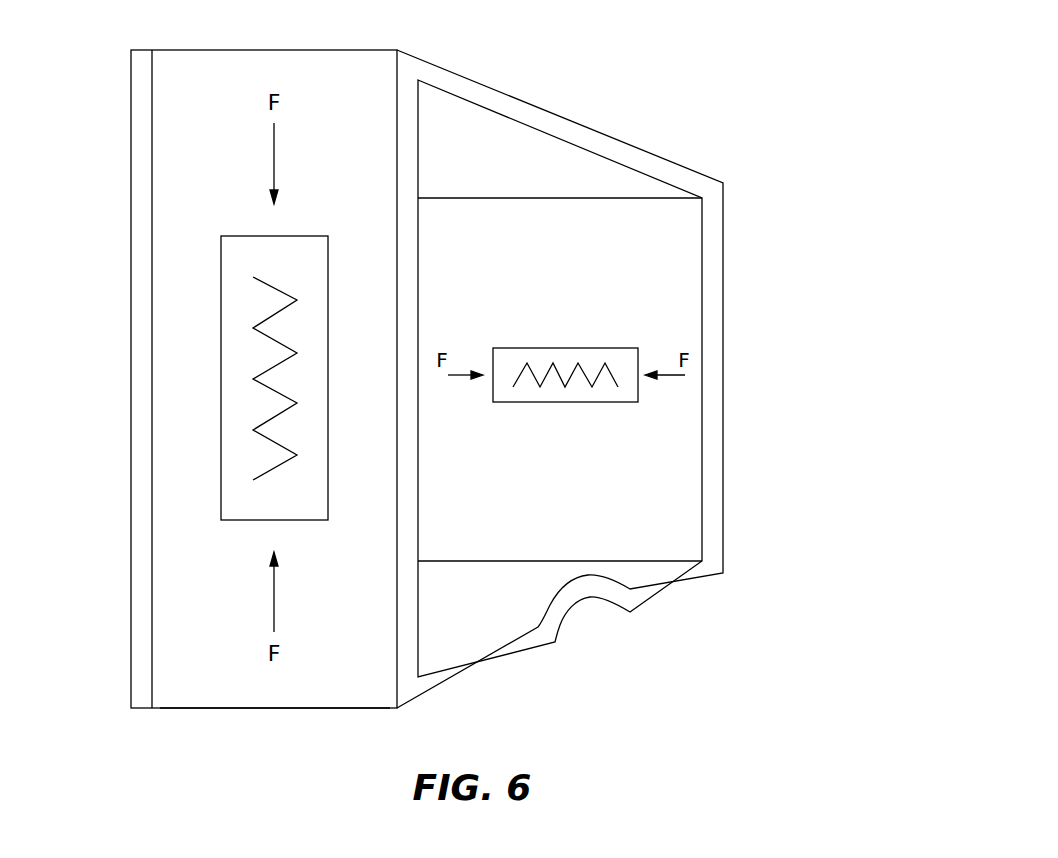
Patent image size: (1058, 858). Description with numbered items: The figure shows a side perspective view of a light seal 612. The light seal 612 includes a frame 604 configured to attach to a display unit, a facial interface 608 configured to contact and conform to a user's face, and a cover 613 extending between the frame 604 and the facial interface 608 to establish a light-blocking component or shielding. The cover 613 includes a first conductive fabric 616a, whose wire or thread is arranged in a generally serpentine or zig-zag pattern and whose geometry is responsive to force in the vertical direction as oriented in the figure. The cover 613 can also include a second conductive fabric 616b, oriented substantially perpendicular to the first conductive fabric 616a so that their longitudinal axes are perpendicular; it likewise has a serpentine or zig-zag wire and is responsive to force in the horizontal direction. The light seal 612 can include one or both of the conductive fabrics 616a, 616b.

The frame 604 is at (131, 217).
The facial interface 608 is at (712, 288).
The light seal 612 is at (622, 48).
The cover 613 is at (202, 663).
The first conductive fabric 616a is at (221, 380).
The second conductive fabric 616b is at (572, 402).